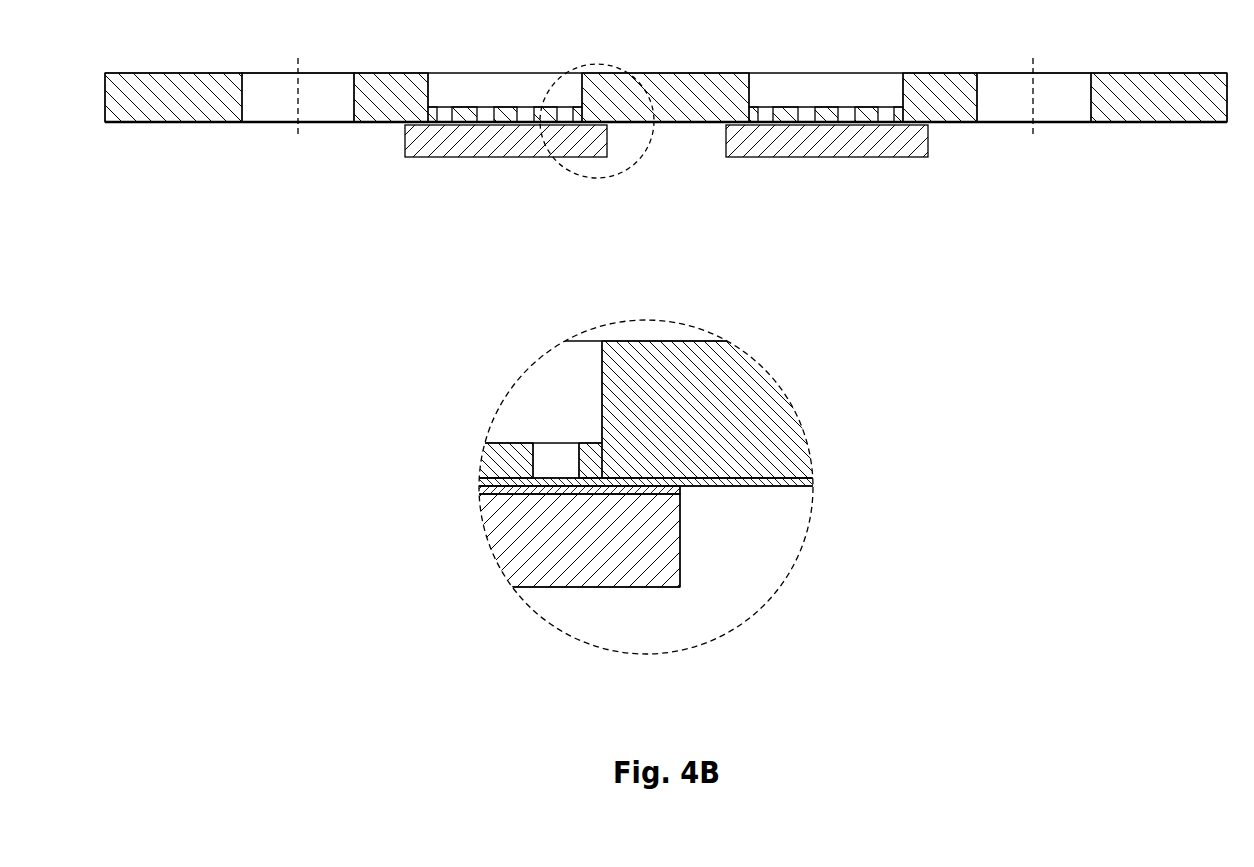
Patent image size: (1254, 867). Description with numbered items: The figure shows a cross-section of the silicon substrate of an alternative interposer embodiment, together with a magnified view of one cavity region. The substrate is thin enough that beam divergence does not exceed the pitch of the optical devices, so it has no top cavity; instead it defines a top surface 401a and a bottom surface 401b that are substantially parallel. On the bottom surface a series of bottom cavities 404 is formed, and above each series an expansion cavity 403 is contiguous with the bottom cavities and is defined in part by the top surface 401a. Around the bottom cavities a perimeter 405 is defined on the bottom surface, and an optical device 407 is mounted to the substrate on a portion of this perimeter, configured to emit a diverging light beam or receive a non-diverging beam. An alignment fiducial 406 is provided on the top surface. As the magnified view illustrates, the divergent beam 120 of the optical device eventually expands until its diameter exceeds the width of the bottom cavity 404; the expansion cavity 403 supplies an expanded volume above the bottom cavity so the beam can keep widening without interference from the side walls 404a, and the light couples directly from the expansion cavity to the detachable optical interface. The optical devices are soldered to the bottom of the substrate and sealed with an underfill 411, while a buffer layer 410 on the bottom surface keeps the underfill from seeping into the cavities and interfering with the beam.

The top surface 401a is at (693, 70).
The bottom surface 401b is at (654, 122).
The expansion cavity 403 is at (483, 87).
The bottom cavity 404 is at (487, 118).
The side wall 404a is at (578, 452).
The perimeter 405 is at (767, 122).
The alignment fiducial 406 is at (993, 85).
The optical device 407 is at (912, 142).
The buffer layer 410 is at (803, 481).
The underfill 411 is at (482, 490).
The divergent beam 120 is at (548, 402).